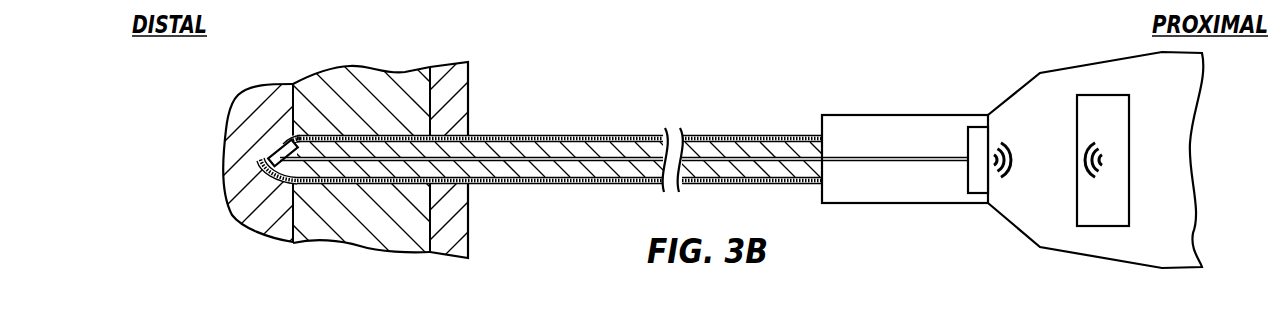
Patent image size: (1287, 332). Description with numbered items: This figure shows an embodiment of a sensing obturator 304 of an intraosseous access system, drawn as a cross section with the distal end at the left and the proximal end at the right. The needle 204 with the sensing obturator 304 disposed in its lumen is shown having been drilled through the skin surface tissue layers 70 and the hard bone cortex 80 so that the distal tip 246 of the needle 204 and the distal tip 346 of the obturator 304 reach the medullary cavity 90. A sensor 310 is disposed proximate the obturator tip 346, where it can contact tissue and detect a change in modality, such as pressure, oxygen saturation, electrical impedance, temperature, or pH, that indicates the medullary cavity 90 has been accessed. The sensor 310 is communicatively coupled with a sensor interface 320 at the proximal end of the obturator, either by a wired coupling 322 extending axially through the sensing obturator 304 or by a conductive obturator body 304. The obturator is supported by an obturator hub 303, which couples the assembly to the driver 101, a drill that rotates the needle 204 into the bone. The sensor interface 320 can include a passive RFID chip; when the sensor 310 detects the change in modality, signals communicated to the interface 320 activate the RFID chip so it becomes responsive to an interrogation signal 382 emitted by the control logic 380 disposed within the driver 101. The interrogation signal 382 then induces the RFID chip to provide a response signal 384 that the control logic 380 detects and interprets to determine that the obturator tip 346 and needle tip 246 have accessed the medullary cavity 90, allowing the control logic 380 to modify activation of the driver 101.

The skin surface tissue layers 70 is at (462, 104).
The bone cortex 80 is at (375, 105).
The medullary cavity 90 is at (284, 122).
The driver 101 is at (1031, 73).
The needle 204 is at (517, 184).
The distal tip of the needle 246 is at (259, 163).
The obturator hub 303 is at (865, 123).
The sensing obturator 304 is at (634, 147).
The sensor 310 is at (283, 143).
The sensor interface 320 is at (978, 133).
The wire 322 is at (591, 162).
The distal tip of the obturator 346 is at (258, 161).
The control logic 380 is at (1112, 103).
The interrogation signal 382 is at (1103, 160).
The response signal 384 is at (1008, 177).